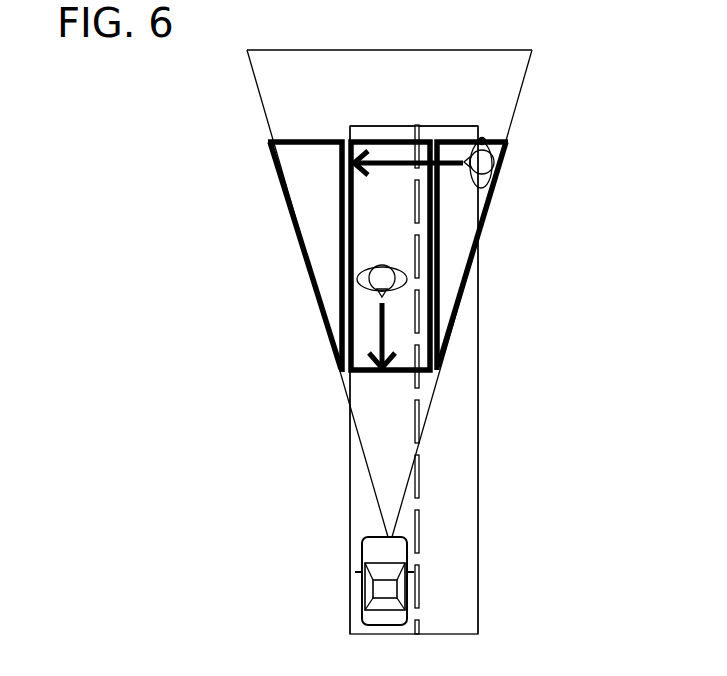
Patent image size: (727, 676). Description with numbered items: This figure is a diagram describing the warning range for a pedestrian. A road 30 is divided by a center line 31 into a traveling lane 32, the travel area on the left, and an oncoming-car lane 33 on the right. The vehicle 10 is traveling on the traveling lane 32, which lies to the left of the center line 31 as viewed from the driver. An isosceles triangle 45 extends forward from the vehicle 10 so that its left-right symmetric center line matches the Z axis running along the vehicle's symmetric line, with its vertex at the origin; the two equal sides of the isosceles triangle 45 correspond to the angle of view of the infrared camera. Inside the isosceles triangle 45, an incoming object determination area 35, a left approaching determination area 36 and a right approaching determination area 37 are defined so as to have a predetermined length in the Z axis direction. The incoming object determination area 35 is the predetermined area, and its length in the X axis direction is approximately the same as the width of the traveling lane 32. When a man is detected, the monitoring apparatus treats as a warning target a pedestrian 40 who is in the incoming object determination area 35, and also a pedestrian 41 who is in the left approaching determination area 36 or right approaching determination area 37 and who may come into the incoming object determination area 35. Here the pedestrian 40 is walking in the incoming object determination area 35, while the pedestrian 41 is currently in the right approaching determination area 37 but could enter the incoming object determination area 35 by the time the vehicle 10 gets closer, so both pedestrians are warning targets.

The vehicle 10 is at (362, 595).
The road 30 is at (504, 486).
The center line 31 is at (415, 407).
The traveling lane 32 is at (382, 133).
The oncoming-car lane 33 is at (448, 135).
The incoming object determination area 35 is at (365, 193).
The left approaching determination area 36 is at (315, 220).
The right approaching determination area 37 is at (462, 217).
The pedestrian 40 is at (365, 283).
The pedestrian 41 is at (485, 185).
The isosceles triangle 45 is at (294, 50).